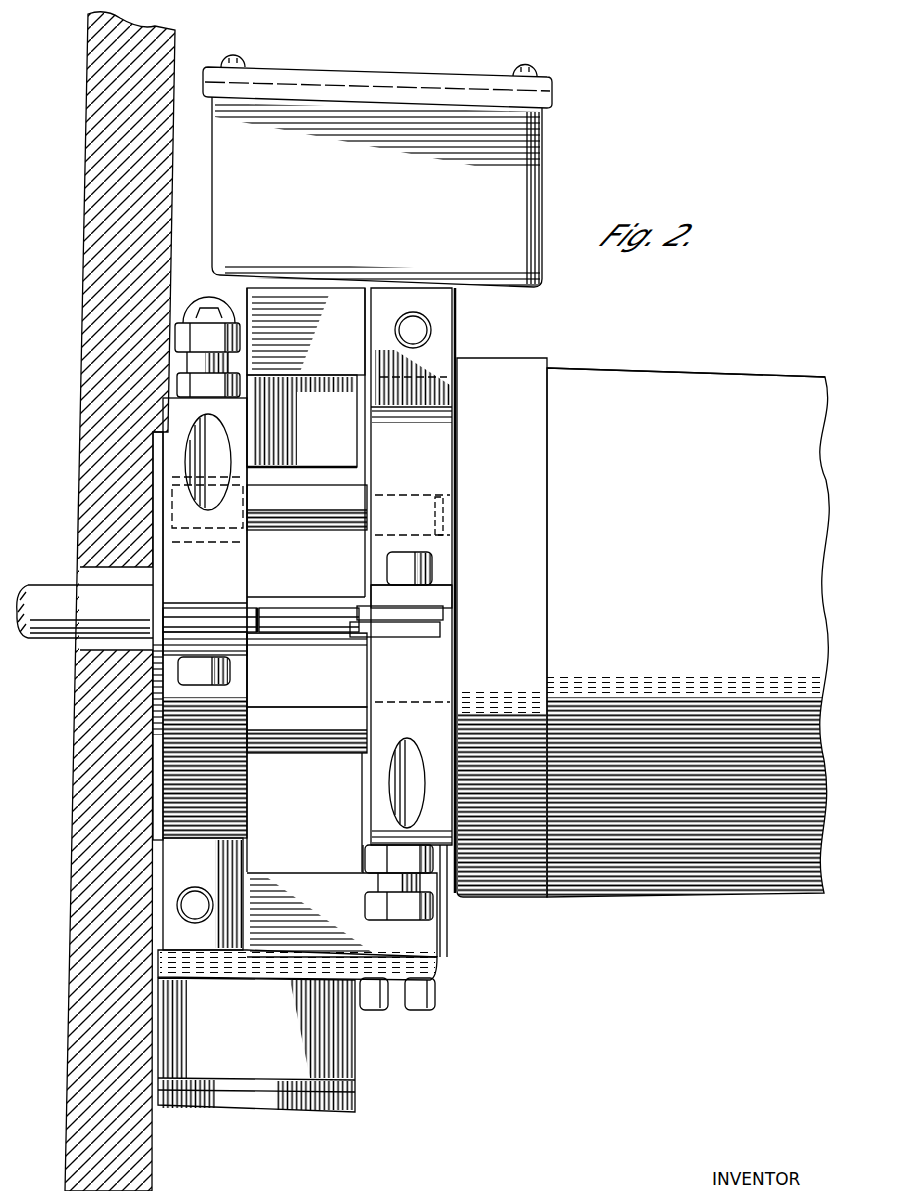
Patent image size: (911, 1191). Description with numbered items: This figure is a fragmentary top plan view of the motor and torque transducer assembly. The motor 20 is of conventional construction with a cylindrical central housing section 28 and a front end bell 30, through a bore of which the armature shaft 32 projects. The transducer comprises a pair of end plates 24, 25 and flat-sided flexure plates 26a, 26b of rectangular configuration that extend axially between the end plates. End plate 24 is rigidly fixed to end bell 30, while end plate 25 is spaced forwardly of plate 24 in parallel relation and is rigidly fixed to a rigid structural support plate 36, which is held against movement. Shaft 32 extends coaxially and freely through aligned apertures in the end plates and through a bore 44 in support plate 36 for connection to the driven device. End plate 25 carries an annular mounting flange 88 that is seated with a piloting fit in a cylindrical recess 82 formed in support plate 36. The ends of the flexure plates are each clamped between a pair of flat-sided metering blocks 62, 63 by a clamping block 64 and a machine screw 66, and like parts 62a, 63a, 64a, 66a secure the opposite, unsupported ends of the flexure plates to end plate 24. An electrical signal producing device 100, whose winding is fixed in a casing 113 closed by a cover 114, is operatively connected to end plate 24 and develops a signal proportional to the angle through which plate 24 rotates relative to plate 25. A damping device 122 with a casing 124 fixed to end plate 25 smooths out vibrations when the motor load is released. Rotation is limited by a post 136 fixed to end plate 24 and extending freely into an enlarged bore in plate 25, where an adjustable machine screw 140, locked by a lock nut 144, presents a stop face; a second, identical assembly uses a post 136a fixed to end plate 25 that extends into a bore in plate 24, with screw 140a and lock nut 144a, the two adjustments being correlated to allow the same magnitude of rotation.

The motor 20 is at (675, 373).
The end plate 24 is at (372, 565).
The end plate 25 is at (248, 558).
The flexure plate 26a is at (346, 324).
The flexure plate 26b is at (298, 628).
The cylindrical central housing section 28 is at (605, 368).
The front end bell 30 is at (515, 358).
The armature shaft 32 is at (40, 640).
The support plate 36 is at (78, 718).
The bore 44 is at (90, 568).
The metering block 62 is at (265, 612).
The metering block 62a is at (452, 630).
The metering block 63 is at (175, 608).
The metering block 63a is at (450, 612).
The clamping block 64 is at (213, 656).
The clamping block 64a is at (440, 597).
The machine screw 66 is at (232, 678).
The machine screw 66a is at (440, 570).
The cylindrical recess 82 is at (153, 553).
The annular mounting flange 88 is at (150, 444).
The electrical signal producing device 100 is at (543, 155).
The casing 113 is at (543, 185).
The cover 114 is at (398, 70).
The damping device 122 is at (357, 1055).
The casing 124 is at (257, 1052).
The post 136 is at (282, 497).
The post 136a is at (272, 752).
The machine screw 140 is at (188, 318).
The machine screw 140a is at (368, 898).
The lock nut 144 is at (183, 382).
The lock nut 144a is at (372, 862).